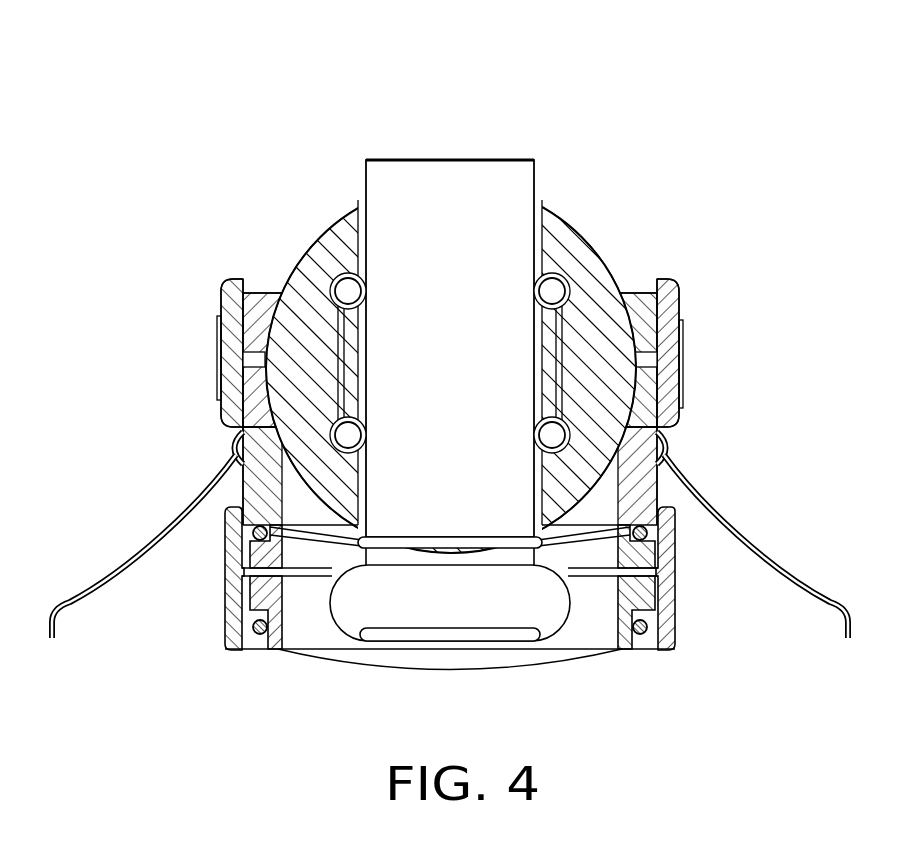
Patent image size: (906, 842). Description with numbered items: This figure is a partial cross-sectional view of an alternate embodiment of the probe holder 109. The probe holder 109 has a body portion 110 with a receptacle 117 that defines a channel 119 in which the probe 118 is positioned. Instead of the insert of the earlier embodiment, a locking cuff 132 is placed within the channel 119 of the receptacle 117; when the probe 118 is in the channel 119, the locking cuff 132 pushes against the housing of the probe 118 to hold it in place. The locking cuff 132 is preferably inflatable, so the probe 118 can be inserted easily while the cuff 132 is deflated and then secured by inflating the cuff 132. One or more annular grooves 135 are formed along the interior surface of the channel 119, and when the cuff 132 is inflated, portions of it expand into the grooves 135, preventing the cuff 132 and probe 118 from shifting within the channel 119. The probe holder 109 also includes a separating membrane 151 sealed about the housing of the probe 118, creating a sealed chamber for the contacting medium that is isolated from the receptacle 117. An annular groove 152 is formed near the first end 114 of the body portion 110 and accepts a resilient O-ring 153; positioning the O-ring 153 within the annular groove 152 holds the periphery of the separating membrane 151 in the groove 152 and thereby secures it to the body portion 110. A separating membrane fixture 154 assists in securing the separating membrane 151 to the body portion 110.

The probe holder 109 is at (594, 100).
The body portion 110 is at (634, 428).
The first end 114 is at (240, 531).
The receptacle 117 is at (307, 293).
The probe 118 is at (458, 160).
The channel 119 is at (362, 203).
The locking cuff 132 is at (566, 274).
The annular grooves 135 is at (339, 268).
The separating membrane 151 is at (567, 543).
The annular groove 152 is at (270, 532).
The O-ring 153 is at (256, 528).
The separating membrane fixture 154 is at (658, 570).